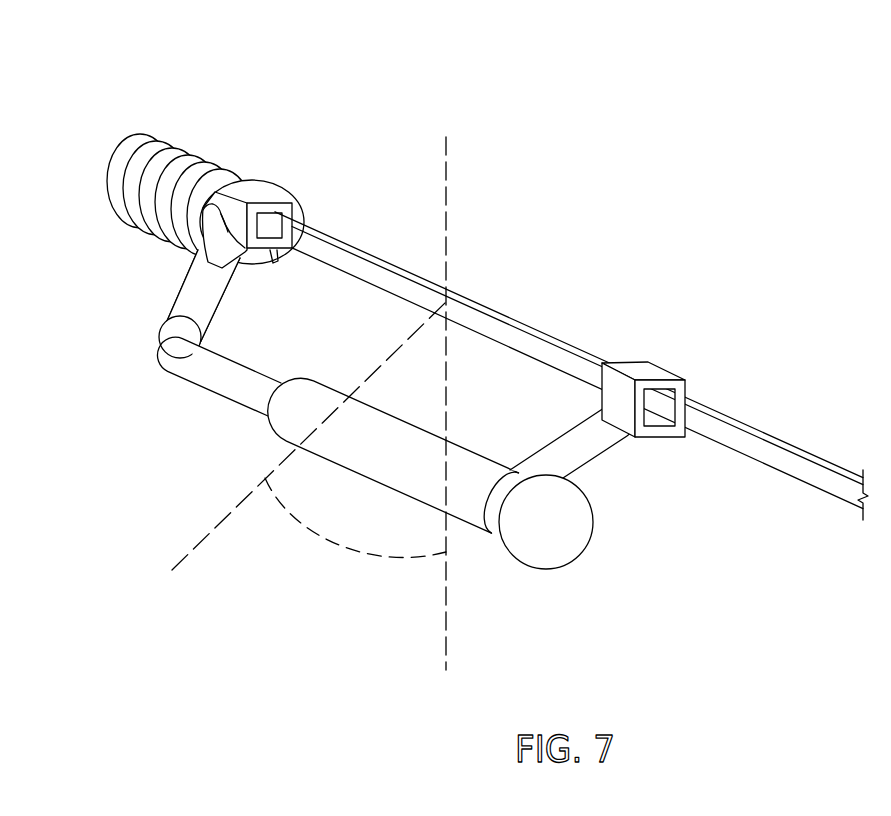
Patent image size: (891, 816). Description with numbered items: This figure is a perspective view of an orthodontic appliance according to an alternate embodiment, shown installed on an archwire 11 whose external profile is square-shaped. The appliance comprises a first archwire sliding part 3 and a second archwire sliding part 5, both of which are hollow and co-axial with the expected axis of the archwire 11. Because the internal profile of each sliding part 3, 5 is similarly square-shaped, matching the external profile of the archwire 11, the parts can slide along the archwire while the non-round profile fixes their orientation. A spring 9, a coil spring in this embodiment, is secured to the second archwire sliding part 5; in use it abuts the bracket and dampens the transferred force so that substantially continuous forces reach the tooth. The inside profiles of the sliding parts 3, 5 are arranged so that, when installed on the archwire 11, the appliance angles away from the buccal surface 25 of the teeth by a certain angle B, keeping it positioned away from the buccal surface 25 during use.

The spring 9 is at (140, 150).
The second archwire sliding part 5 is at (259, 212).
The buccal surface 25 is at (447, 172).
The first archwire sliding part 3 is at (649, 362).
The archwire 11 is at (818, 477).
The angle B is at (355, 538).